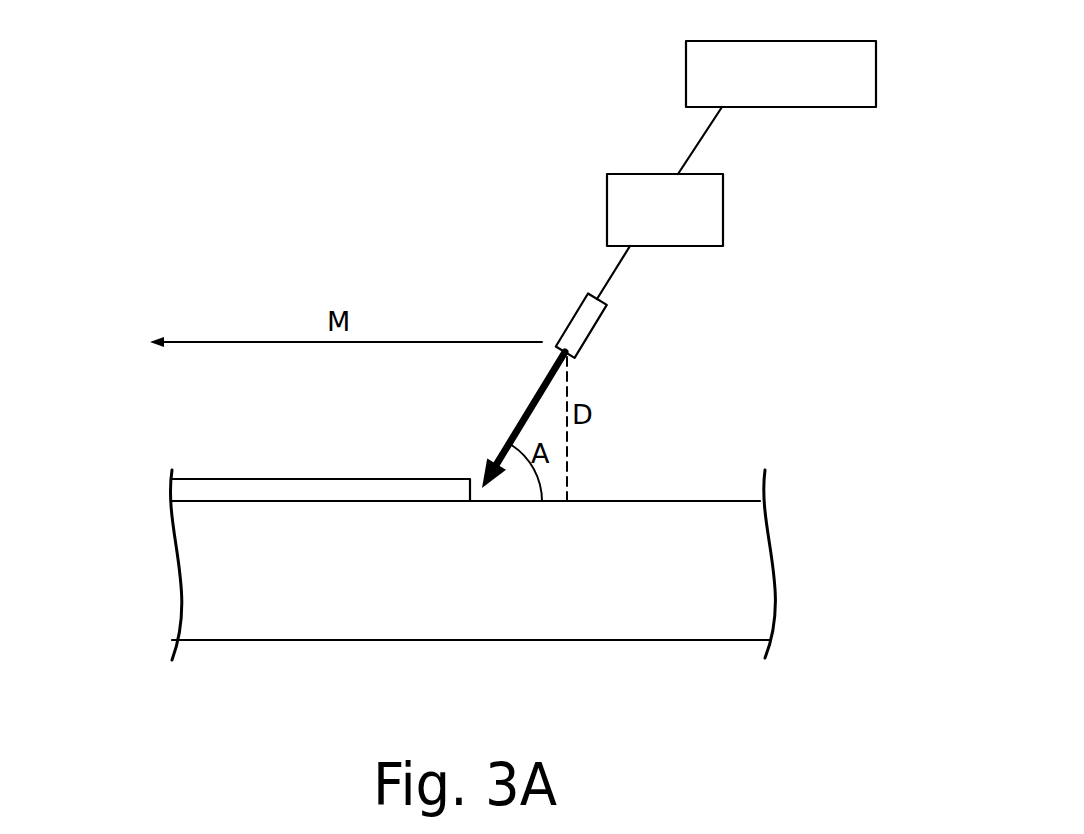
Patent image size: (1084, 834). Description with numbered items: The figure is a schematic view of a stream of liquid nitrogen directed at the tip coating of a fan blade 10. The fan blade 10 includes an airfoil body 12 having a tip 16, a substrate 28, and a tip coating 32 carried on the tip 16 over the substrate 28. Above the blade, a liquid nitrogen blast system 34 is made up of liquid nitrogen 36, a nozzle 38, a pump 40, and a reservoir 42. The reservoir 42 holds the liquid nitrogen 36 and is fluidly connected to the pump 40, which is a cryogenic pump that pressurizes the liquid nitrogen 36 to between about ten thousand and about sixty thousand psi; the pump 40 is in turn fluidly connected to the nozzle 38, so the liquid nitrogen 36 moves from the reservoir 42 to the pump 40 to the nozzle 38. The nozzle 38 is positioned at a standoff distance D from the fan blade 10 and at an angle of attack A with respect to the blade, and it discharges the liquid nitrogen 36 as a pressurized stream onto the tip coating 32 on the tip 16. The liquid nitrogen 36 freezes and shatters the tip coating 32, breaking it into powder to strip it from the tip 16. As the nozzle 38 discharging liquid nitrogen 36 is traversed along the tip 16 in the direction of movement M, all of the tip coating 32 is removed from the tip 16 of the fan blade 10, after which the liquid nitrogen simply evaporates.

The fan blade 10 is at (192, 88).
The airfoil body 12 is at (137, 610).
The tip 16 is at (642, 501).
The substrate 28 is at (707, 558).
The tip coating 32 is at (182, 490).
The liquid nitrogen blast system 34 is at (746, 303).
The liquid nitrogen 36 is at (523, 408).
The nozzle 38 is at (578, 325).
The pump 40 is at (713, 218).
The reservoir 42 is at (868, 77).